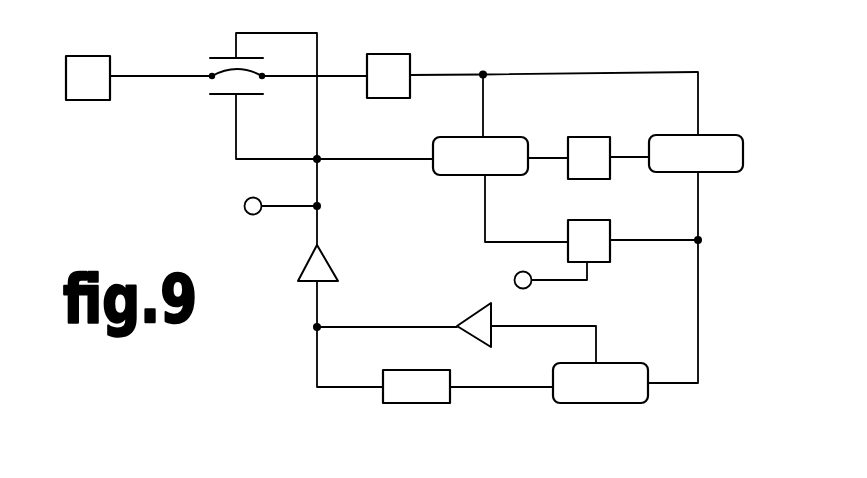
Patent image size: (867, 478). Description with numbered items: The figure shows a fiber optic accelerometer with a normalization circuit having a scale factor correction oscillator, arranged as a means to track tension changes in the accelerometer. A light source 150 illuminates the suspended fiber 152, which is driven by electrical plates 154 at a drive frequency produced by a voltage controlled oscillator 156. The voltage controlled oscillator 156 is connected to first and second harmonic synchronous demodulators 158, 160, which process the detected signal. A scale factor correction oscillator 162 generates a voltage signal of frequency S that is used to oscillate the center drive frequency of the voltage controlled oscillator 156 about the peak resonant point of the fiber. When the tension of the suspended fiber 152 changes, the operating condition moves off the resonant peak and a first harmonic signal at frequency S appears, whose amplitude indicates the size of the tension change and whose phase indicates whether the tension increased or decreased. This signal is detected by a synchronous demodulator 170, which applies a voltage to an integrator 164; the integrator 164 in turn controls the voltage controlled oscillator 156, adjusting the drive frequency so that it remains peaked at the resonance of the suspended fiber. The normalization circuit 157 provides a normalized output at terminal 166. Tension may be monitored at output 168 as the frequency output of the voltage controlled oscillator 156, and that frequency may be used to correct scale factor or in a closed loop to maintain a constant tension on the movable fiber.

The light source 150 is at (100, 100).
The suspended fiber 152 is at (263, 73).
The electrical plates 154 is at (219, 96).
The voltage controlled oscillator 156 is at (323, 262).
The normalization circuit 157 is at (572, 228).
The first harmonic synchronous demodulator 158 is at (520, 137).
The second harmonic synchronous demodulator 160 is at (716, 172).
The scale factor correction oscillator 162 is at (416, 403).
The integrator 164 is at (478, 313).
The normalized output 166 is at (530, 287).
The tension output 168 is at (259, 213).
The synchronous demodulator 170 is at (628, 403).